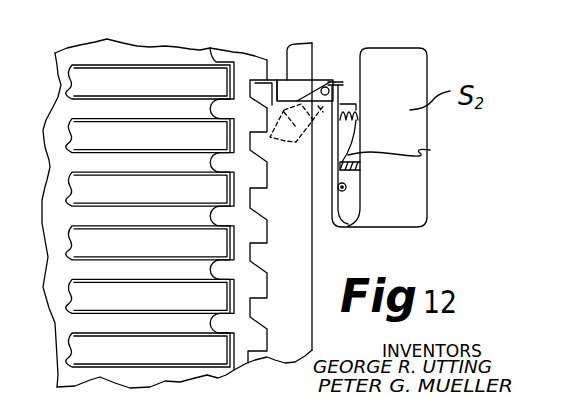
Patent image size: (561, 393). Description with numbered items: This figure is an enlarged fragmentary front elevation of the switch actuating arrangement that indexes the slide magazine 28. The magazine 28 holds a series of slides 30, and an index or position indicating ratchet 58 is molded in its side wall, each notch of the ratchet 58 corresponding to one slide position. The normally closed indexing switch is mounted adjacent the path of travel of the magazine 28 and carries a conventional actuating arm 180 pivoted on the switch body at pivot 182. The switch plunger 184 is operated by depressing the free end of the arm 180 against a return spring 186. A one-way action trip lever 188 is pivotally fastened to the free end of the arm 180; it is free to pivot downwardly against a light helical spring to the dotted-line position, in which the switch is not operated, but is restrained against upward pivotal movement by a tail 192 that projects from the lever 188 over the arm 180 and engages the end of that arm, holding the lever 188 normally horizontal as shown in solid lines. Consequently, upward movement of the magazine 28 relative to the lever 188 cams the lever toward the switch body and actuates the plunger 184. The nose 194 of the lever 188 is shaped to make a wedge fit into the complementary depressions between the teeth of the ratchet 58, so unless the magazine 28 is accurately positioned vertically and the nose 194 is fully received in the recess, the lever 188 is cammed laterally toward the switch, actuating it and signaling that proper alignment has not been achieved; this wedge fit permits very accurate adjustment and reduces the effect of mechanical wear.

The magazine 28 is at (185, 46).
The slides 30 is at (80, 135).
The ratchet 58 is at (252, 226).
The actuating arm 180 is at (340, 98).
The pivot 182 is at (347, 187).
The switch plunger 184 is at (430, 150).
The return spring 186 is at (352, 110).
The trip lever 188 is at (292, 80).
The tail 192 is at (327, 78).
The nose 194 is at (266, 84).